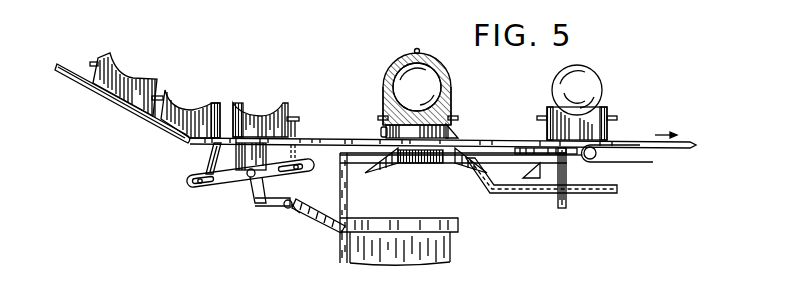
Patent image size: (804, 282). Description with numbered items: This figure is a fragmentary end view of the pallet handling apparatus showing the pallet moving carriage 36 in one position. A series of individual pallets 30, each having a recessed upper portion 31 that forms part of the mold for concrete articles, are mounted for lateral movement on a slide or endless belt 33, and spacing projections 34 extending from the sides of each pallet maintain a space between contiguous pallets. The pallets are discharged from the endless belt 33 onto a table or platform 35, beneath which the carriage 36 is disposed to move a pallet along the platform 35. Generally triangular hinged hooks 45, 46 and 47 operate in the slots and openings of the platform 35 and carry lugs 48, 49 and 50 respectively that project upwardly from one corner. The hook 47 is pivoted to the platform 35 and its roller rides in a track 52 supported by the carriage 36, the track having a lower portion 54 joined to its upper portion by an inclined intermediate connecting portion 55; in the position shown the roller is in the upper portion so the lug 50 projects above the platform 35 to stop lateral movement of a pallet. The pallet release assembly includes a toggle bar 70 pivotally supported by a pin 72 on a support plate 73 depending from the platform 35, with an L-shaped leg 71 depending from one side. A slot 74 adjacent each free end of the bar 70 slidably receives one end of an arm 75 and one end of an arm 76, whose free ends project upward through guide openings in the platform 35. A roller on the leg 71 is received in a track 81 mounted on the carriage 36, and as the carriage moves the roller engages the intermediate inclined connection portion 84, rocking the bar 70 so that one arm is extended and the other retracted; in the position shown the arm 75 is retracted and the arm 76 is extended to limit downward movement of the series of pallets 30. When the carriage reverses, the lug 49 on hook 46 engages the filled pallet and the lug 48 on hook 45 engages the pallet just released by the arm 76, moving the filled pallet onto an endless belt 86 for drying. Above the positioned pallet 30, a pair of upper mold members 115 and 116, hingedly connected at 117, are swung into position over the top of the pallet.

The pallet 30 is at (233, 106).
The recessed upper portion 31 is at (128, 67).
The slide or endless belt 33 is at (133, 113).
The spacing projection 34 is at (95, 62).
The table or platform 35 is at (492, 142).
The carriage 36 is at (339, 254).
The hinged hook 45 is at (413, 146).
The hinged hook 46 is at (577, 158).
The hinged hook 47 is at (449, 153).
The lug 48 is at (381, 128).
The lug 49 is at (544, 138).
The lug 50 is at (453, 128).
The track 52 is at (543, 194).
The lower portion 54 is at (598, 193).
The inclined intermediate connecting portion 55 is at (488, 178).
The toggle bar 70 is at (242, 178).
The L-shaped leg 71 is at (257, 202).
The pin 72 is at (258, 180).
The support plate 73 is at (237, 162).
The slot 74 is at (203, 188).
The arm 75 is at (207, 165).
The arm 76 is at (296, 120).
The track 81 is at (303, 213).
The intermediate inclined connection portion 84 is at (320, 224).
The endless belt 86 is at (686, 142).
The upper mold member 115 is at (392, 66).
The upper mold member 116 is at (441, 64).
The hinge connection 117 is at (418, 47).